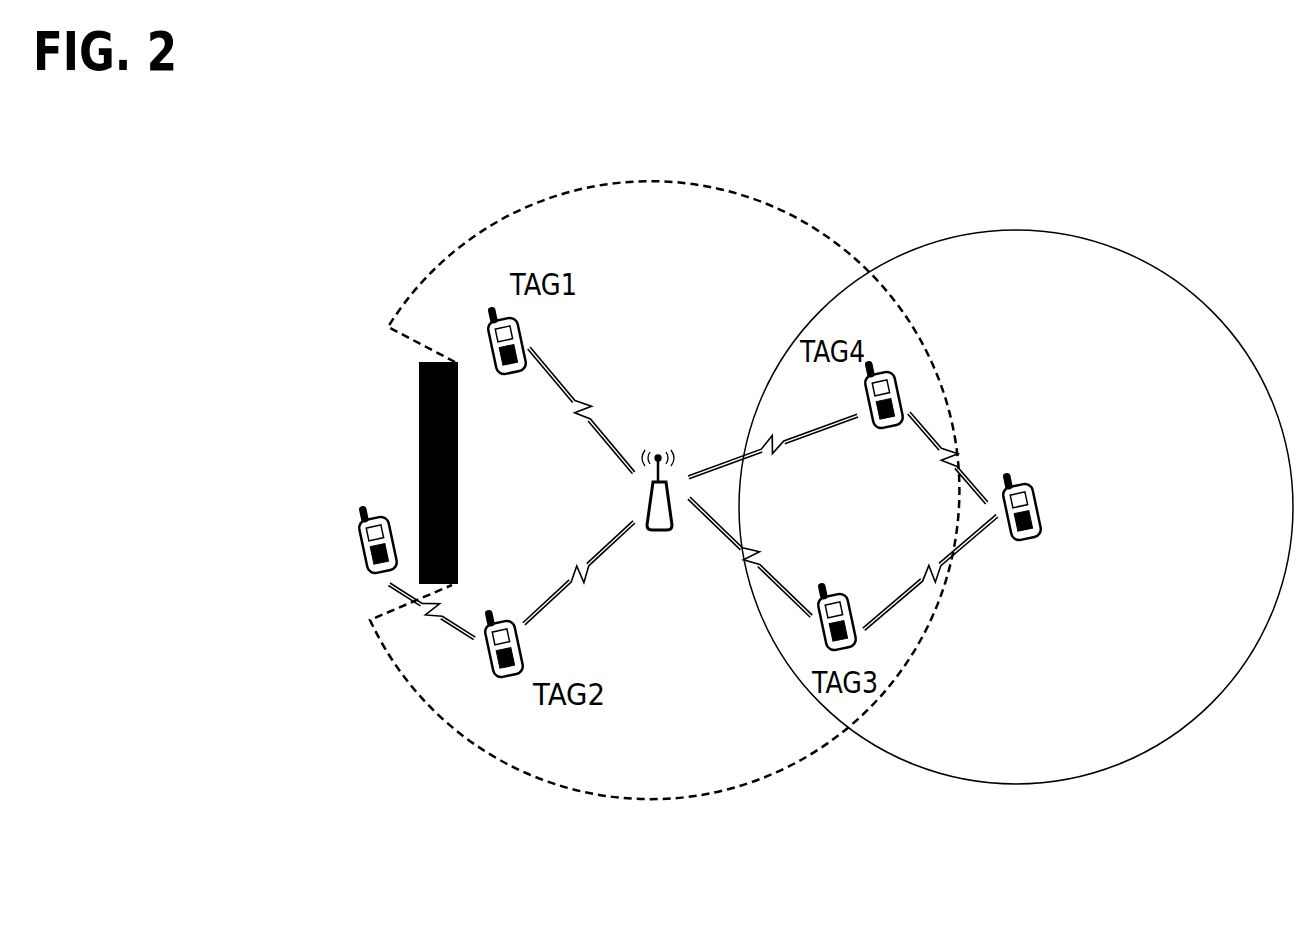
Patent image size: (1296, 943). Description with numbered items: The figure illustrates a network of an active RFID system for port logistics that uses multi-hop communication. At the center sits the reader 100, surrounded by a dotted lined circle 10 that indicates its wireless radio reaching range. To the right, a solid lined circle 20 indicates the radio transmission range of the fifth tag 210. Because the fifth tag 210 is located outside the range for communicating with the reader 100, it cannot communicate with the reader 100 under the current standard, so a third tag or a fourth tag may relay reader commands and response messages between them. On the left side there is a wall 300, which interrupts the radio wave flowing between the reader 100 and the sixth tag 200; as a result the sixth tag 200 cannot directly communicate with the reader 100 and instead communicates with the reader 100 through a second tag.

The dotted lined circle 10 is at (694, 797).
The solid lined circle 20 is at (1152, 752).
The reader 100 is at (657, 572).
The sixth tag 200 is at (358, 510).
The fifth tag 210 is at (1020, 548).
The wall 300 is at (418, 392).